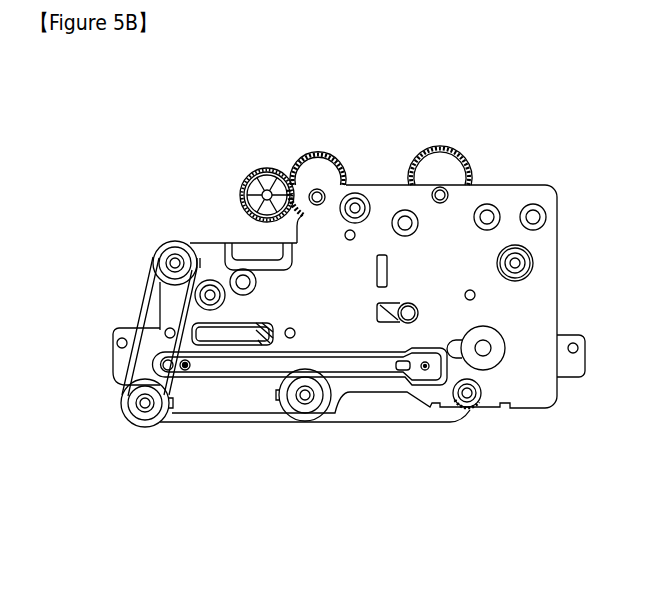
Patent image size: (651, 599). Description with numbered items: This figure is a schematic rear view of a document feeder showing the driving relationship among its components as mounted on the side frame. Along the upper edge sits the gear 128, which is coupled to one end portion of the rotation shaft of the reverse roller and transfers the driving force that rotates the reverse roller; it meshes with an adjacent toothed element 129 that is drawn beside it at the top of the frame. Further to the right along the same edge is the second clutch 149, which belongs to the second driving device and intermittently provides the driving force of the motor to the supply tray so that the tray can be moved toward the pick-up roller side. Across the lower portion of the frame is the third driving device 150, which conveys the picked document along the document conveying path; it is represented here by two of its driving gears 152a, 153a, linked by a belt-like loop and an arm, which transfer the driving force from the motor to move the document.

The gear 128 is at (238, 170).
The gear 129 is at (312, 162).
The second clutch 149 is at (437, 158).
The third driving device 150 is at (284, 402).
The driving gear 152a is at (145, 427).
The driving gear 153a is at (304, 430).